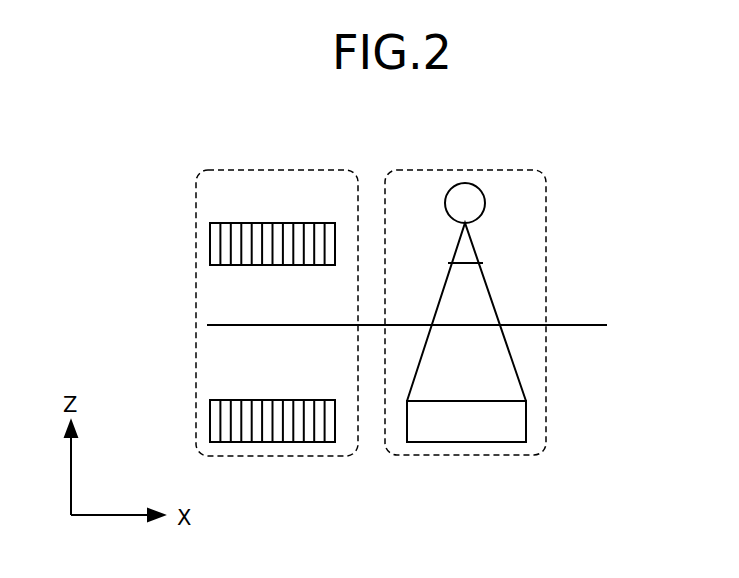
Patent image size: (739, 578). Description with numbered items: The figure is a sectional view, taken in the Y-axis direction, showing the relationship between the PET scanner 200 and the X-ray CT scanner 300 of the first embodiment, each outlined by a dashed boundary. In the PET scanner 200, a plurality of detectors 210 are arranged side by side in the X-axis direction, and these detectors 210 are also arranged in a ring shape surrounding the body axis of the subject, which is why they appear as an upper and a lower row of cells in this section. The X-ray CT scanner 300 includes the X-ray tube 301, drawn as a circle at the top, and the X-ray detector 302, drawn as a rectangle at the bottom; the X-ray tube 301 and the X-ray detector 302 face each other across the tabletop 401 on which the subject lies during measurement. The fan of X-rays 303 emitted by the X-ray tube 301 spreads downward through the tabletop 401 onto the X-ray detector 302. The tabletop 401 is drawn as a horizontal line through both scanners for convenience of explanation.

The PET scanner 200 is at (281, 170).
The detectors 210 is at (246, 223).
The X-ray CT scanner 300 is at (484, 170).
The X-ray tube 301 is at (485, 202).
The X-ray detector 302 is at (526, 424).
The X-rays 303 is at (515, 359).
The tabletop 401 is at (581, 325).